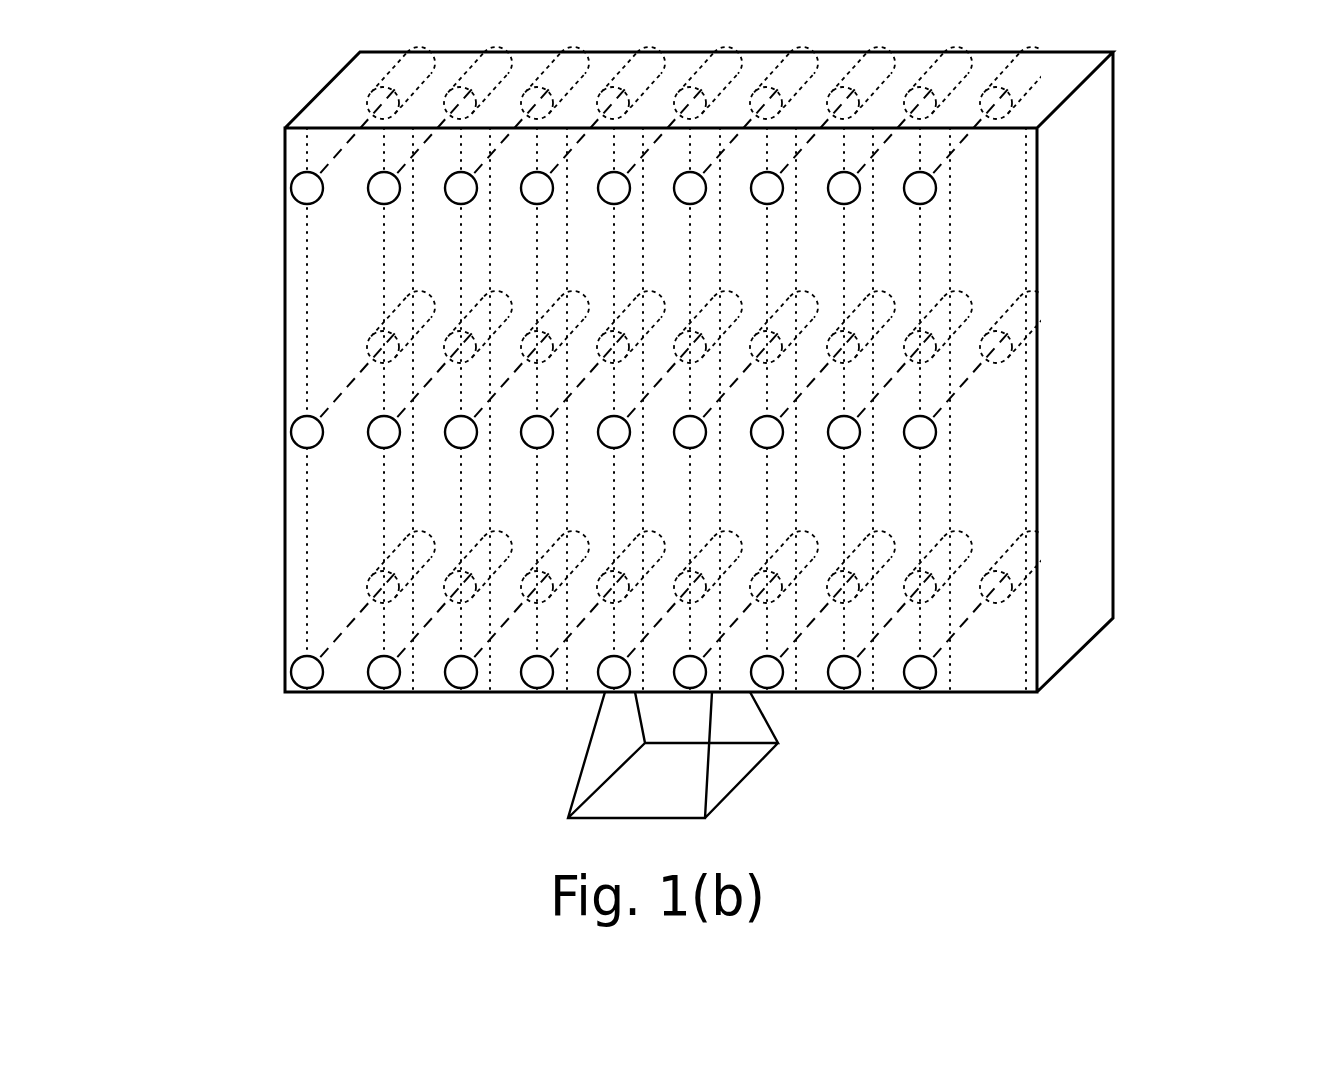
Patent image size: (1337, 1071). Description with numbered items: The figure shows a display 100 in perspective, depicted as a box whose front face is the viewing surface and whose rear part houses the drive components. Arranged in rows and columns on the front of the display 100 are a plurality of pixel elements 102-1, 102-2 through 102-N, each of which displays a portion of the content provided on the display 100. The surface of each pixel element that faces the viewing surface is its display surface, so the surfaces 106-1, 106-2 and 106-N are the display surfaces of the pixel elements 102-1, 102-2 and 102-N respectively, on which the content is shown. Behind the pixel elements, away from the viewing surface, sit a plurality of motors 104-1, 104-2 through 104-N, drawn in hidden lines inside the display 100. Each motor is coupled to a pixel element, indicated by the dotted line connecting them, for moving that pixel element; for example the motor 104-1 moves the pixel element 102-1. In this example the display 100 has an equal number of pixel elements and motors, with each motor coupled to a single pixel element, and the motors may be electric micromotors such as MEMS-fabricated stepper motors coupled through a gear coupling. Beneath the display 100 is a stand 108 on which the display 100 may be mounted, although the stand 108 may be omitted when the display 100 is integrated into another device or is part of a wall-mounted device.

The display 100 is at (1175, 682).
The pixel element 102-1 is at (292, 186).
The pixel element 102-2 is at (373, 199).
The pixel element 102-N is at (933, 675).
The motor 104-1 is at (390, 83).
The motor 104-2 is at (447, 108).
The motor 104-N is at (990, 602).
The display surface 106-1 is at (310, 188).
The display surface 106-2 is at (387, 188).
The display surface 106-N is at (924, 676).
The stand 108 is at (642, 792).